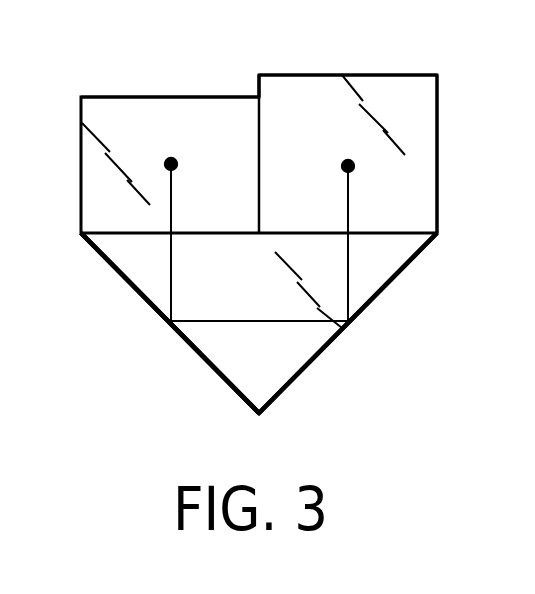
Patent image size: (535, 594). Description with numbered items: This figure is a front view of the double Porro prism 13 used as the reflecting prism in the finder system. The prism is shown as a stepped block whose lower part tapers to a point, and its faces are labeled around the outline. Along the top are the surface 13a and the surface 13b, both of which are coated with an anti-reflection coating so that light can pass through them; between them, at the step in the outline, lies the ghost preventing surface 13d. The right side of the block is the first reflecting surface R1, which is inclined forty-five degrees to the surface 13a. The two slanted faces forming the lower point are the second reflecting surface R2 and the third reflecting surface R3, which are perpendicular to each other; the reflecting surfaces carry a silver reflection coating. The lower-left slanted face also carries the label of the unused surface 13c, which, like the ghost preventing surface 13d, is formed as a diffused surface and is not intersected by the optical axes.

The double Porro prism 13 is at (398, 73).
The surface 13a is at (317, 102).
The surface 13b is at (132, 110).
The unused surface 13c is at (145, 268).
The ghost preventing surface 13d is at (215, 98).
The first reflecting surface R1 is at (415, 163).
The second reflecting surface R2 is at (377, 295).
The third reflecting surface R3 is at (205, 358).